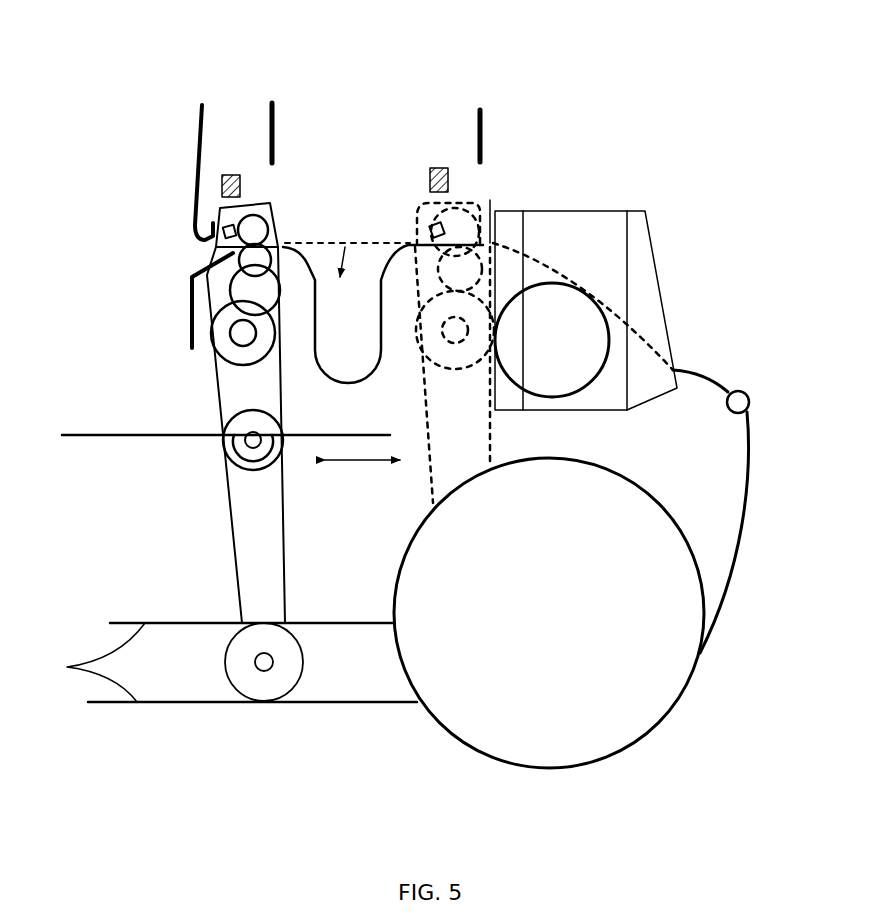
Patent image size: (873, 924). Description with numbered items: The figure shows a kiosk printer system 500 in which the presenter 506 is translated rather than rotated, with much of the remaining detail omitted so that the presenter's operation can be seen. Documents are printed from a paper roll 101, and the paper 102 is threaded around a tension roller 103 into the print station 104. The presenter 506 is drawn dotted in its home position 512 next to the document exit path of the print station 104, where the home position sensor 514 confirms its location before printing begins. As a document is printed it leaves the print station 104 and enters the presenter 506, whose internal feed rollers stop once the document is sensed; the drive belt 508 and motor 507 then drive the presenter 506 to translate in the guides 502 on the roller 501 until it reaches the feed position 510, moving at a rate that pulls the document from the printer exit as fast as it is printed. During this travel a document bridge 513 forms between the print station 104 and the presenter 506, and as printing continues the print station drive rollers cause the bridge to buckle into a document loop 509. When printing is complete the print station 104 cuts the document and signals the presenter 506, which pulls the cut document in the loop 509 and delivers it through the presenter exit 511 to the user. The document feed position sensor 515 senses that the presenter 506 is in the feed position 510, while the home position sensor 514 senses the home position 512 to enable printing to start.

The printer system 500 is at (650, 90).
The paper roll 101 is at (670, 710).
The paper 102 is at (733, 560).
The tension roller 103 is at (748, 396).
The print station 104 is at (660, 278).
The roller 501 is at (267, 688).
The guides 502 is at (67, 667).
The presenter 506 is at (257, 535).
The motor 507 is at (233, 463).
The drive belt 508 is at (102, 435).
The document loop 509 is at (342, 363).
The feed position 510 is at (274, 120).
The presenter exit 511 is at (175, 250).
The home position 512 is at (483, 123).
The document bridge 513 is at (308, 243).
The home position sensor 514 is at (438, 165).
The document feed position sensor 515 is at (231, 173).